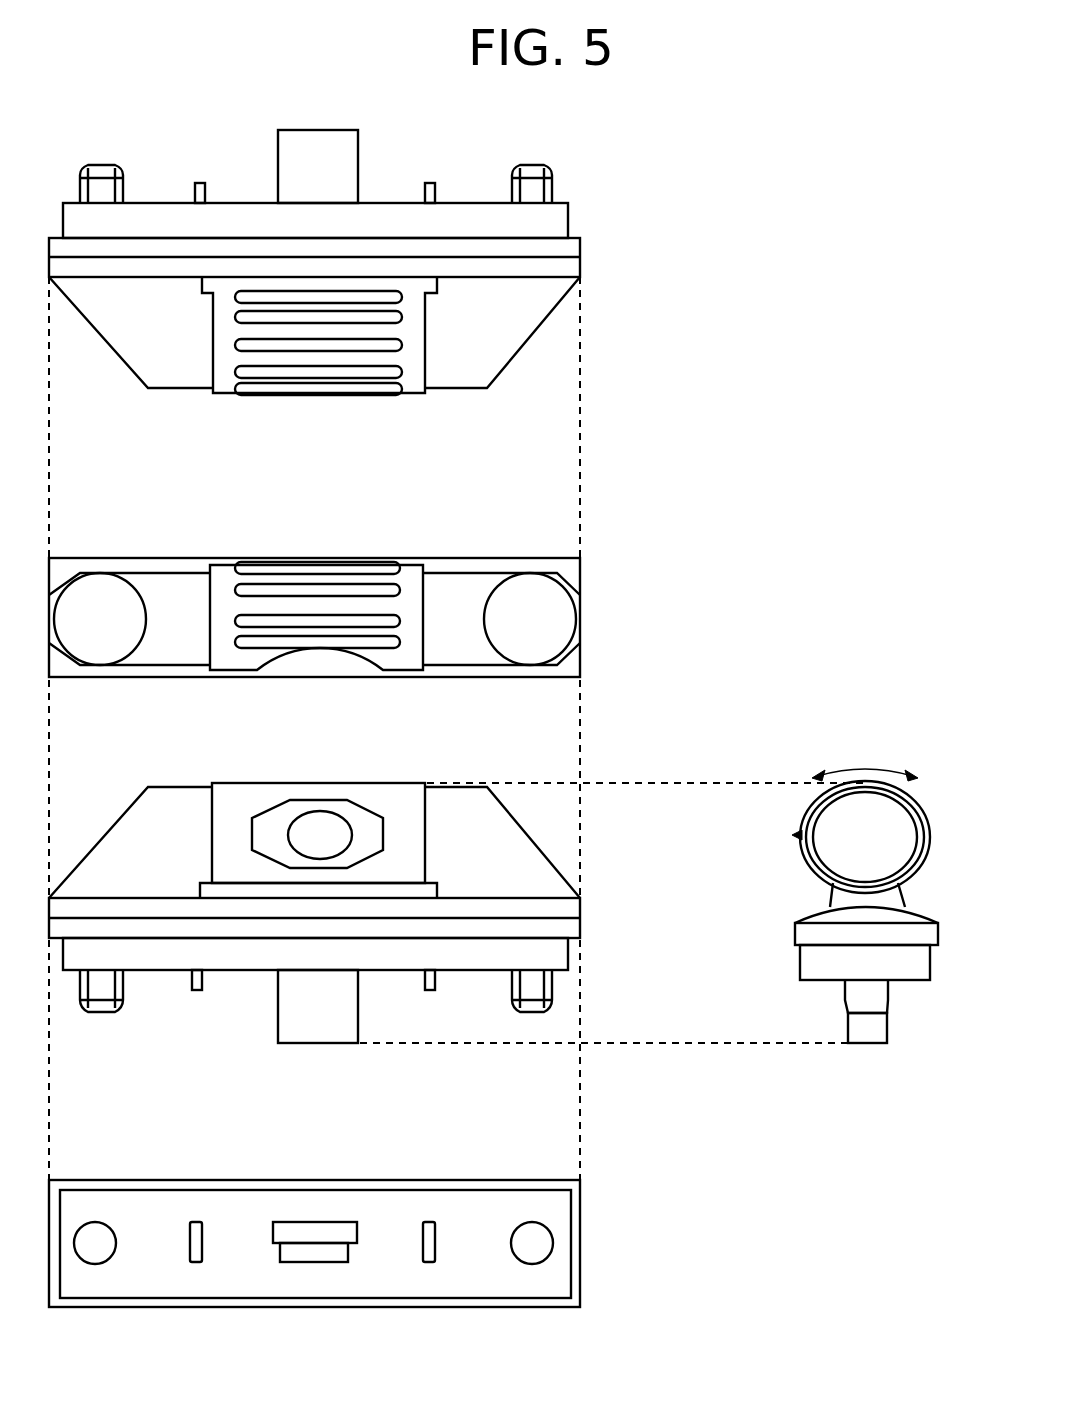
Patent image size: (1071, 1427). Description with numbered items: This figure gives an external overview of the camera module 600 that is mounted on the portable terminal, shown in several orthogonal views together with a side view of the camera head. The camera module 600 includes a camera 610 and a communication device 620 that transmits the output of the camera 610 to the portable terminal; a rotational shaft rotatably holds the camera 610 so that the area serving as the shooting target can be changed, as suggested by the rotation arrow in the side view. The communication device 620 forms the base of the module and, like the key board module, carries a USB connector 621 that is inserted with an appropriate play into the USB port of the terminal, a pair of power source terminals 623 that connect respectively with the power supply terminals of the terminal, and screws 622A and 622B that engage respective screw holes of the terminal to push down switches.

The camera module 600 is at (752, 200).
The camera 610 is at (322, 783).
The communication device 620 is at (583, 906).
The USB connector 621 is at (318, 1043).
The screw 622A is at (552, 990).
The screw 622B is at (105, 1012).
The power source terminals 623 is at (197, 183).